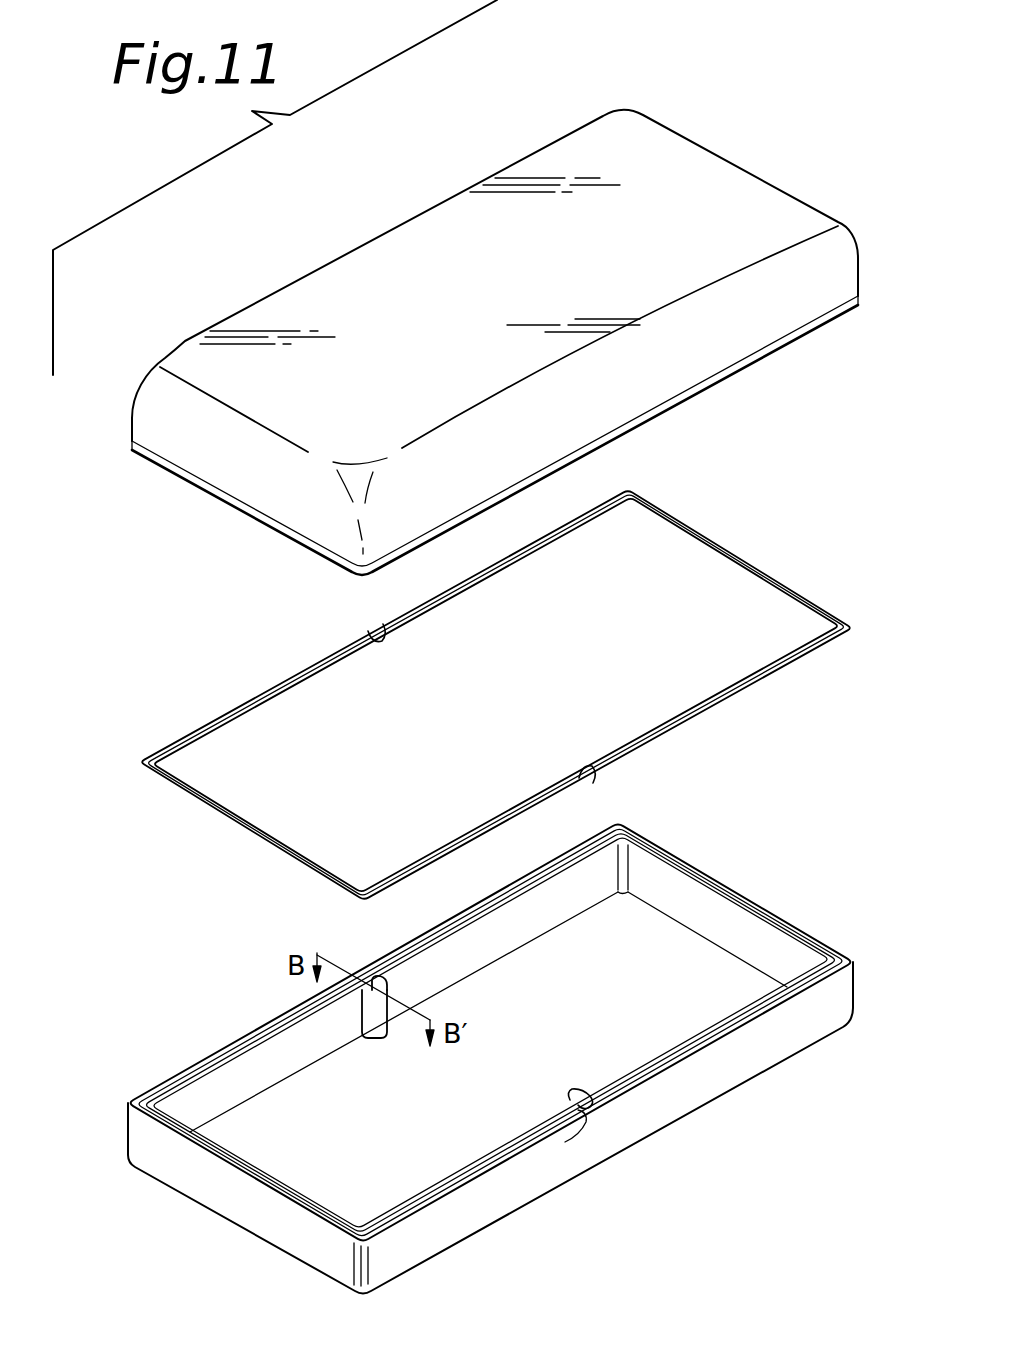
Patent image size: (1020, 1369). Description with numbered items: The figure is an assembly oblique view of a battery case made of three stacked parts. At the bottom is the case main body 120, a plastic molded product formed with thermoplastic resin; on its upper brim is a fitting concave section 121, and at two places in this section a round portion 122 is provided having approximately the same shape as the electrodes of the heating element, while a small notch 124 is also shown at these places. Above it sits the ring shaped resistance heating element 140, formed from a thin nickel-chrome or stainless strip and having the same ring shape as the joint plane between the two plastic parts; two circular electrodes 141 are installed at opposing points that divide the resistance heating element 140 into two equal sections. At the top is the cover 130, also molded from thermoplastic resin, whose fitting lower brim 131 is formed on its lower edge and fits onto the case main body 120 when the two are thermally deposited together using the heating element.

The case main body 120 is at (242, 1207).
The fitting concave section 121 is at (745, 1020).
The round portion 122 is at (363, 991).
The notch 124 is at (378, 978).
The cover 130 is at (393, 272).
The fitting lower brim 131 is at (795, 338).
The ring shaped resistance heating element 140 is at (782, 585).
The circular electrodes 141 is at (375, 640).